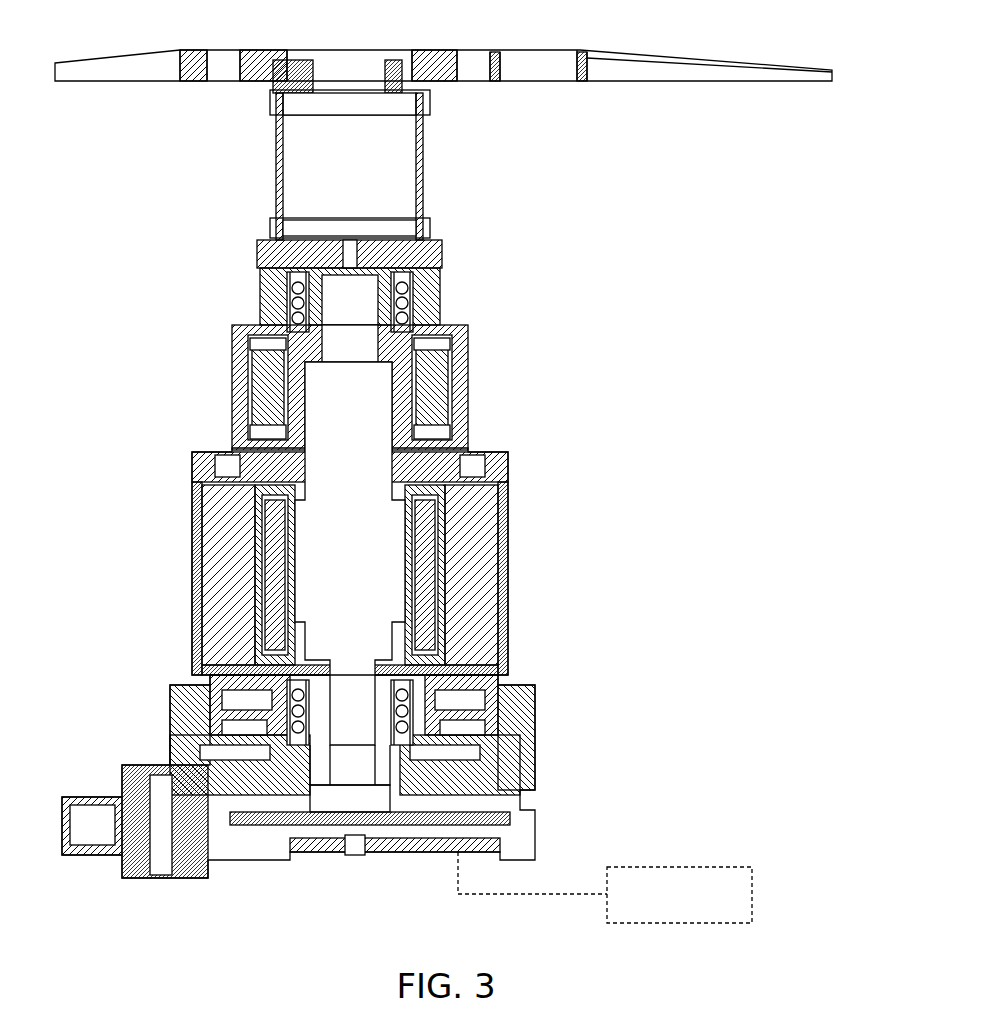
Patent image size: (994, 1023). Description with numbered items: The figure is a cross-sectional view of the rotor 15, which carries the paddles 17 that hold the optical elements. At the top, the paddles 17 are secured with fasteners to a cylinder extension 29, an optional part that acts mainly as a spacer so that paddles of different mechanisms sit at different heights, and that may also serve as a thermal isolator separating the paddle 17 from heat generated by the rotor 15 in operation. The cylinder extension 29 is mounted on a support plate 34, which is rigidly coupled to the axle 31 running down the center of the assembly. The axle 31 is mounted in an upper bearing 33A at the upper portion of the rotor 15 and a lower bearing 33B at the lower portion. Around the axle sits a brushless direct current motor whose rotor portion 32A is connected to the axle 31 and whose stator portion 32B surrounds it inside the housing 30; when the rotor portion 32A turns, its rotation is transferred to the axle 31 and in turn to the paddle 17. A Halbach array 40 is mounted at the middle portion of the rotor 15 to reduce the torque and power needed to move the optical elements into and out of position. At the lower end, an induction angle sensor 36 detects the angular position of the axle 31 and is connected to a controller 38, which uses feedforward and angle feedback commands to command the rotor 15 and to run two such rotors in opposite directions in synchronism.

The rotor 15 is at (566, 190).
The paddle 17 is at (535, 55).
The cylinder extension 29 is at (278, 170).
The motor housing 30 is at (490, 578).
The axle 31 is at (390, 540).
The rotor portion 32A is at (262, 580).
The stator portion 32B is at (208, 578).
The bearing 33A is at (398, 300).
The bearing 33B is at (417, 723).
The support plate 34 is at (258, 253).
The induction angle sensor 36 is at (497, 830).
The controller 38 is at (680, 867).
The Halbach array 40 is at (420, 405).